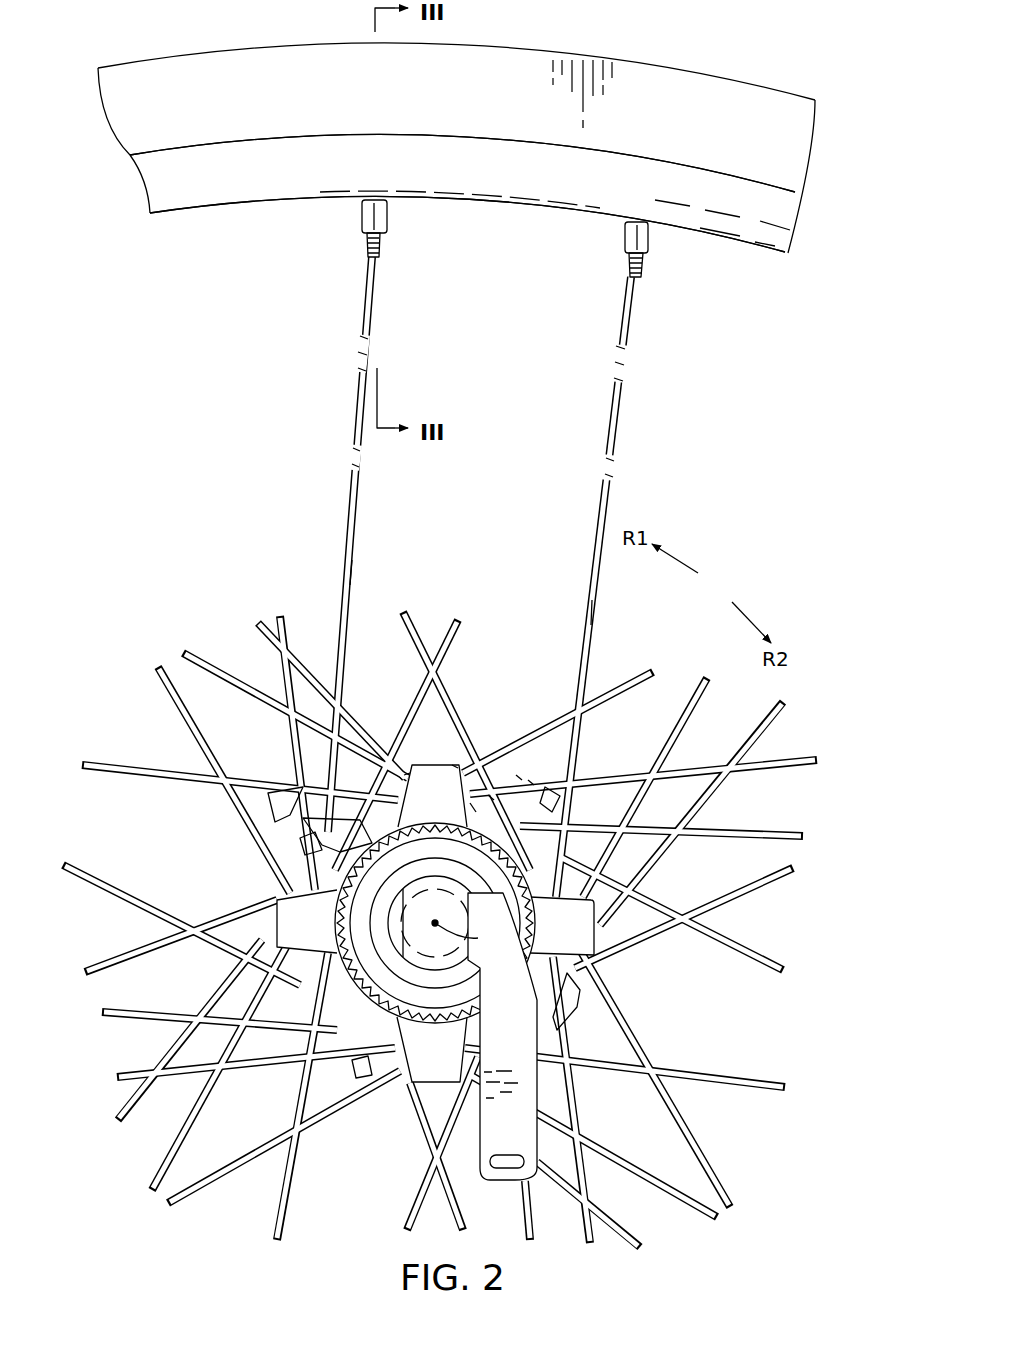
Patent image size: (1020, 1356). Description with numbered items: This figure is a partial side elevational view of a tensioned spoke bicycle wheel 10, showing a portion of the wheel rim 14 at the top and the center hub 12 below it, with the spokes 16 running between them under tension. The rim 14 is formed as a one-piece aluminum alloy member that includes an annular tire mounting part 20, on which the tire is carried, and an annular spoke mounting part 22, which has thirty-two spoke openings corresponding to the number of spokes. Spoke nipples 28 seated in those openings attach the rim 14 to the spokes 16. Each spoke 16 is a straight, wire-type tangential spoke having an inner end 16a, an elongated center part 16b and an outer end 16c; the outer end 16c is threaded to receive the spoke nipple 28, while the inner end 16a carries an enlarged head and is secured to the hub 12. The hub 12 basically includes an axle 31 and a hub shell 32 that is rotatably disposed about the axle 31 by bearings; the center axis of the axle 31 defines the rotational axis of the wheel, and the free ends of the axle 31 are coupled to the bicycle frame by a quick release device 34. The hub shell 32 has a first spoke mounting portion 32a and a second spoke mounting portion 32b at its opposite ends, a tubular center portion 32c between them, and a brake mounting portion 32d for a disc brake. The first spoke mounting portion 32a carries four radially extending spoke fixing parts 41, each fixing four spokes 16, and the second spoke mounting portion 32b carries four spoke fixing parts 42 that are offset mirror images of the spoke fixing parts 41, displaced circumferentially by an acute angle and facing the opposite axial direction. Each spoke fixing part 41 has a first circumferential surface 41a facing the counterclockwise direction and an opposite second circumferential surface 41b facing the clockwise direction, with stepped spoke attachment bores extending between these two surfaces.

The bicycle wheel 10 is at (738, 56).
The hub 12 is at (608, 948).
The rim 14 is at (218, 215).
The spokes 16 is at (360, 547).
The inner end 16a is at (300, 810).
The elongated center part 16b is at (352, 572).
The outer end 16c is at (380, 248).
The annular tire mounting part 20 is at (238, 165).
The annular spoke mounting part 22 is at (284, 172).
The spoke nipple 28 is at (388, 215).
The axle 31 is at (437, 990).
The hub shell 32 is at (572, 660).
The first spoke mounting portion 32a is at (456, 760).
The second spoke mounting portion 32b is at (518, 770).
The tubular center portion 32c is at (490, 790).
The brake mounting portion 32d is at (530, 775).
The quick release device 34 is at (392, 948).
The spoke fixing parts 41 is at (440, 758).
The first circumferential surface 41a is at (400, 775).
The second circumferential surface 41b is at (472, 808).
The spoke fixing parts 42 is at (548, 790).